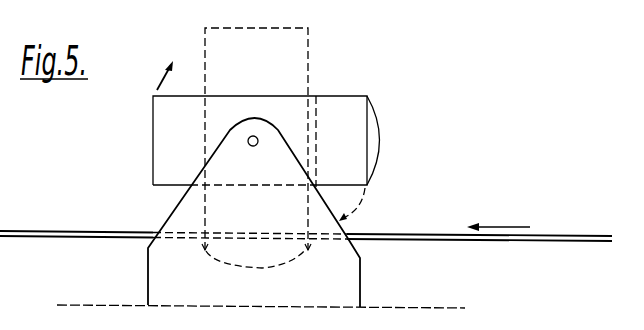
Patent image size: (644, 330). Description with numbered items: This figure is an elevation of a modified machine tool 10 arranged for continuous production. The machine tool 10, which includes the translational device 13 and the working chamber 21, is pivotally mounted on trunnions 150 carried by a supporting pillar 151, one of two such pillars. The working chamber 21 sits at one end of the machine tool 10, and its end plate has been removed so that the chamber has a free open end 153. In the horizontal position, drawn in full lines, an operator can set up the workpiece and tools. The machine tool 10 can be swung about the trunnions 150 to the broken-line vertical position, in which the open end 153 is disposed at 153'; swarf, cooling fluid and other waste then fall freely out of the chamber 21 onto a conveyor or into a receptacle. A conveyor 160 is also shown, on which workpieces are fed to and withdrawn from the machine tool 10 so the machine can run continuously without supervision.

The machine tool 10 is at (325, 93).
The translational device 13 is at (185, 148).
The working chamber 21 is at (347, 146).
The trunnions 150 is at (249, 145).
The supporting pillar 151 is at (180, 203).
The free open end 153 is at (391, 158).
The open end in vertical position 153' is at (269, 274).
The conveyor 160 is at (553, 236).